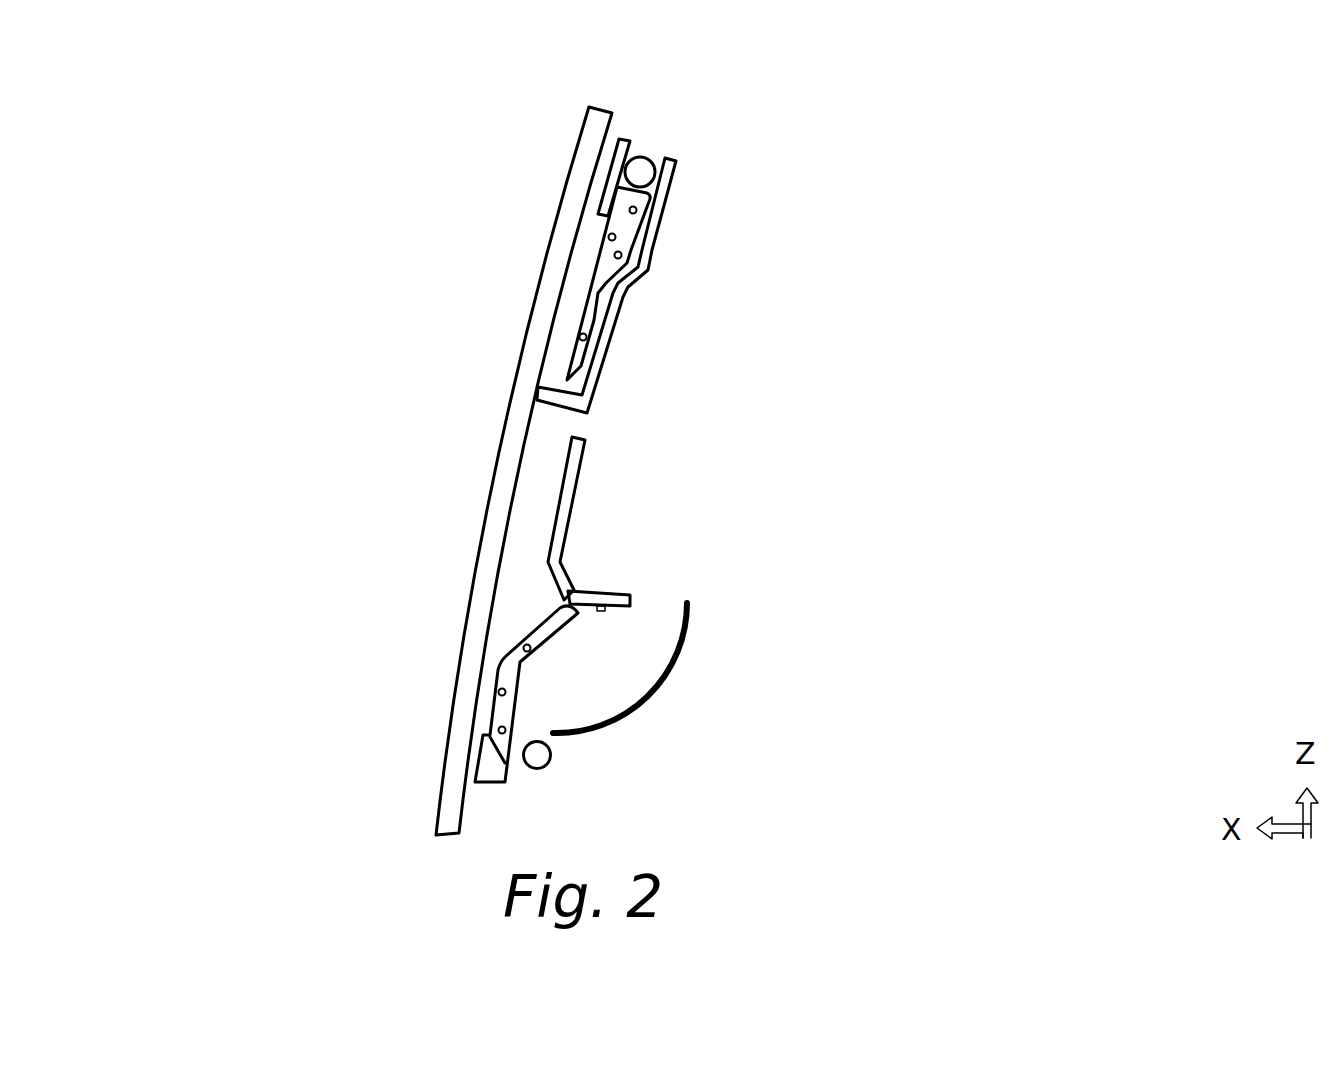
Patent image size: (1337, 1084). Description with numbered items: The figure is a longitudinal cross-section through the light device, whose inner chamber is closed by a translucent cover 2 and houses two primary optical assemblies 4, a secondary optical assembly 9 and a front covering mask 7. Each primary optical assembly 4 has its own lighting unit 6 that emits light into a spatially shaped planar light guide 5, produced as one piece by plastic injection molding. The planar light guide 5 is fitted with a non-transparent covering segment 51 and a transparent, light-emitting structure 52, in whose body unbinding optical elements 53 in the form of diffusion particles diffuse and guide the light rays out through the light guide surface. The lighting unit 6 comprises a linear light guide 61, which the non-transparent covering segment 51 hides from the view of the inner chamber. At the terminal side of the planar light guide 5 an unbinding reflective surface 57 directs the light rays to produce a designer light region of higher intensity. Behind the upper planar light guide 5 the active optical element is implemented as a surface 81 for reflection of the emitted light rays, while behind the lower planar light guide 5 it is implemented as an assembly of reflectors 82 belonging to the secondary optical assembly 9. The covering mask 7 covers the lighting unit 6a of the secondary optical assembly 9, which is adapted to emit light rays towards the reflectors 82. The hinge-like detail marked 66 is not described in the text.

The translucent cover 2 is at (434, 797).
The primary optical assembly 4 is at (640, 92).
The planar light guide 5 is at (582, 264).
The non-transparent covering segment 51 is at (615, 173).
The transparent light-emitting structure 52 is at (618, 226).
The unbinding optical elements 53 is at (614, 256).
The unbinding reflective surface 57 is at (625, 273).
The lighting unit 6 is at (651, 159).
The lighting unit of the secondary optical assembly 6a is at (614, 583).
The linear light guide 61 is at (641, 172).
The hook 66 is at (652, 196).
The front covering mask 7 is at (552, 507).
The surface for reflection of light rays 81 is at (589, 350).
The reflectors 82 is at (642, 707).
The secondary optical assembly 9 is at (647, 525).